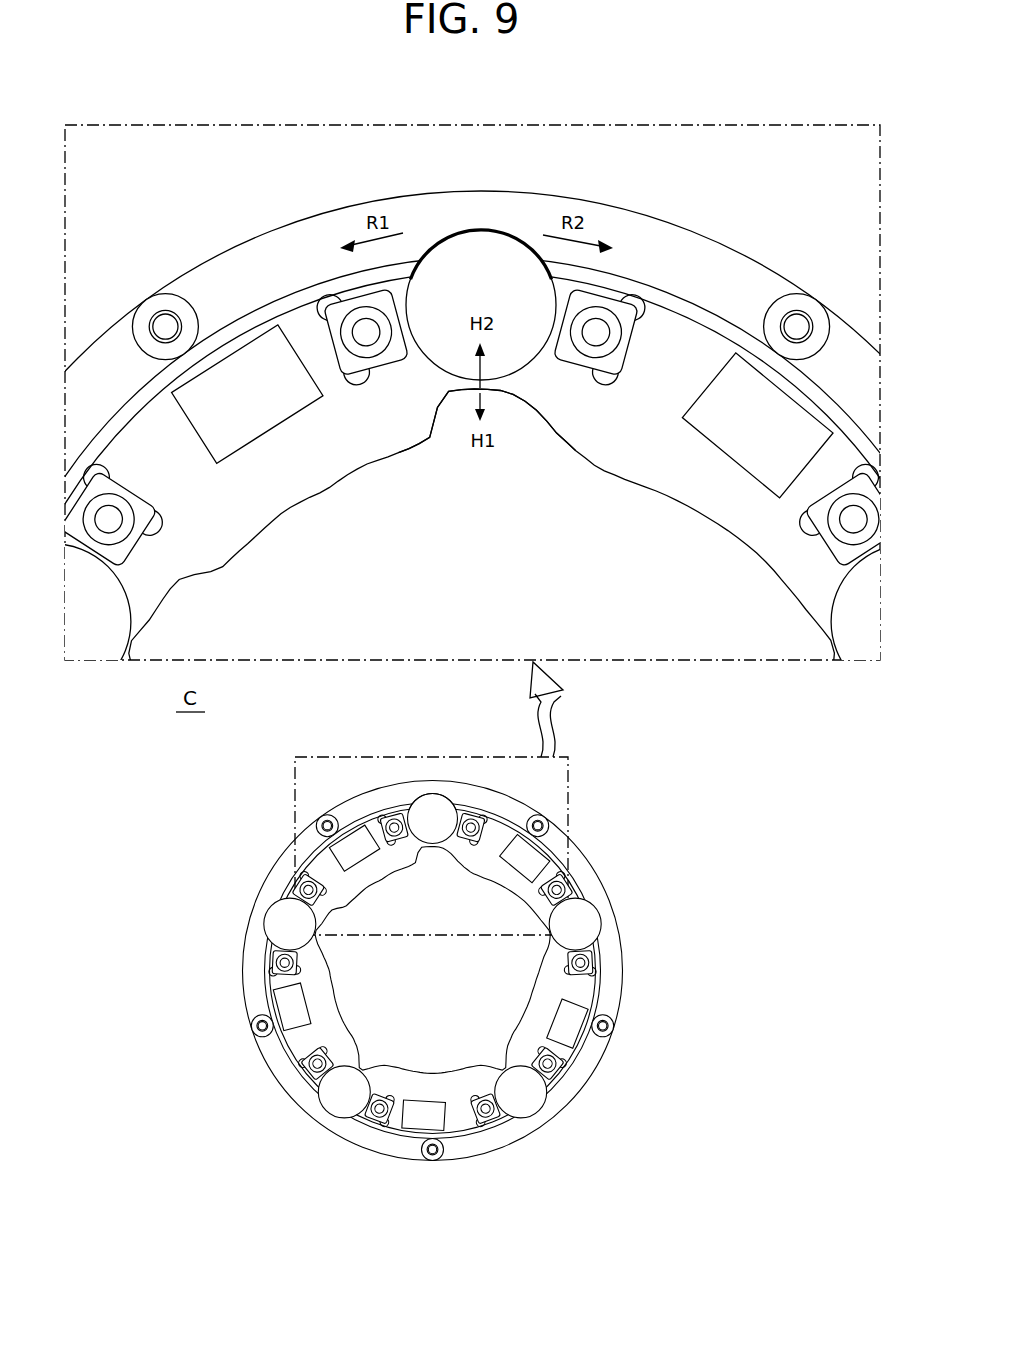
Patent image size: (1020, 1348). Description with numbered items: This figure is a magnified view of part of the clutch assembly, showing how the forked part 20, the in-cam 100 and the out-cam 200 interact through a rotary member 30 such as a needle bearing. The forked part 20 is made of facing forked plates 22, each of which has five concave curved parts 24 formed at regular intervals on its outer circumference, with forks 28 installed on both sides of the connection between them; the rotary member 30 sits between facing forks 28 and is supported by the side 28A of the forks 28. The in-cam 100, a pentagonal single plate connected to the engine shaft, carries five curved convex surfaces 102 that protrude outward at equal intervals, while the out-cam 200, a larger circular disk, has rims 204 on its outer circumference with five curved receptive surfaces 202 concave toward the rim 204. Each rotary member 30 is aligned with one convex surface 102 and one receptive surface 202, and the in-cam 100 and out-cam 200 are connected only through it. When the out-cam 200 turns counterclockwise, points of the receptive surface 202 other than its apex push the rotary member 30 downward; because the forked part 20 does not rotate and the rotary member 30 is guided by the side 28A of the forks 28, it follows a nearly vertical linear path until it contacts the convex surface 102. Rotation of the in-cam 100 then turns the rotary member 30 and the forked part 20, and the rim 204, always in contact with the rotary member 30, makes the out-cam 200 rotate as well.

The forked part 20 is at (475, 748).
The forked plate 22 is at (175, 420).
The concave curved part 24 is at (527, 440).
The fork 28 is at (486, 679).
The side of the fork 28A is at (413, 293).
The rotary member 30 is at (452, 270).
The in-cam 100 is at (493, 701).
The curved convex surface 102 is at (558, 440).
The out-cam 200 is at (510, 706).
The curved receptive surface 202 is at (489, 232).
The rim 204 is at (713, 280).